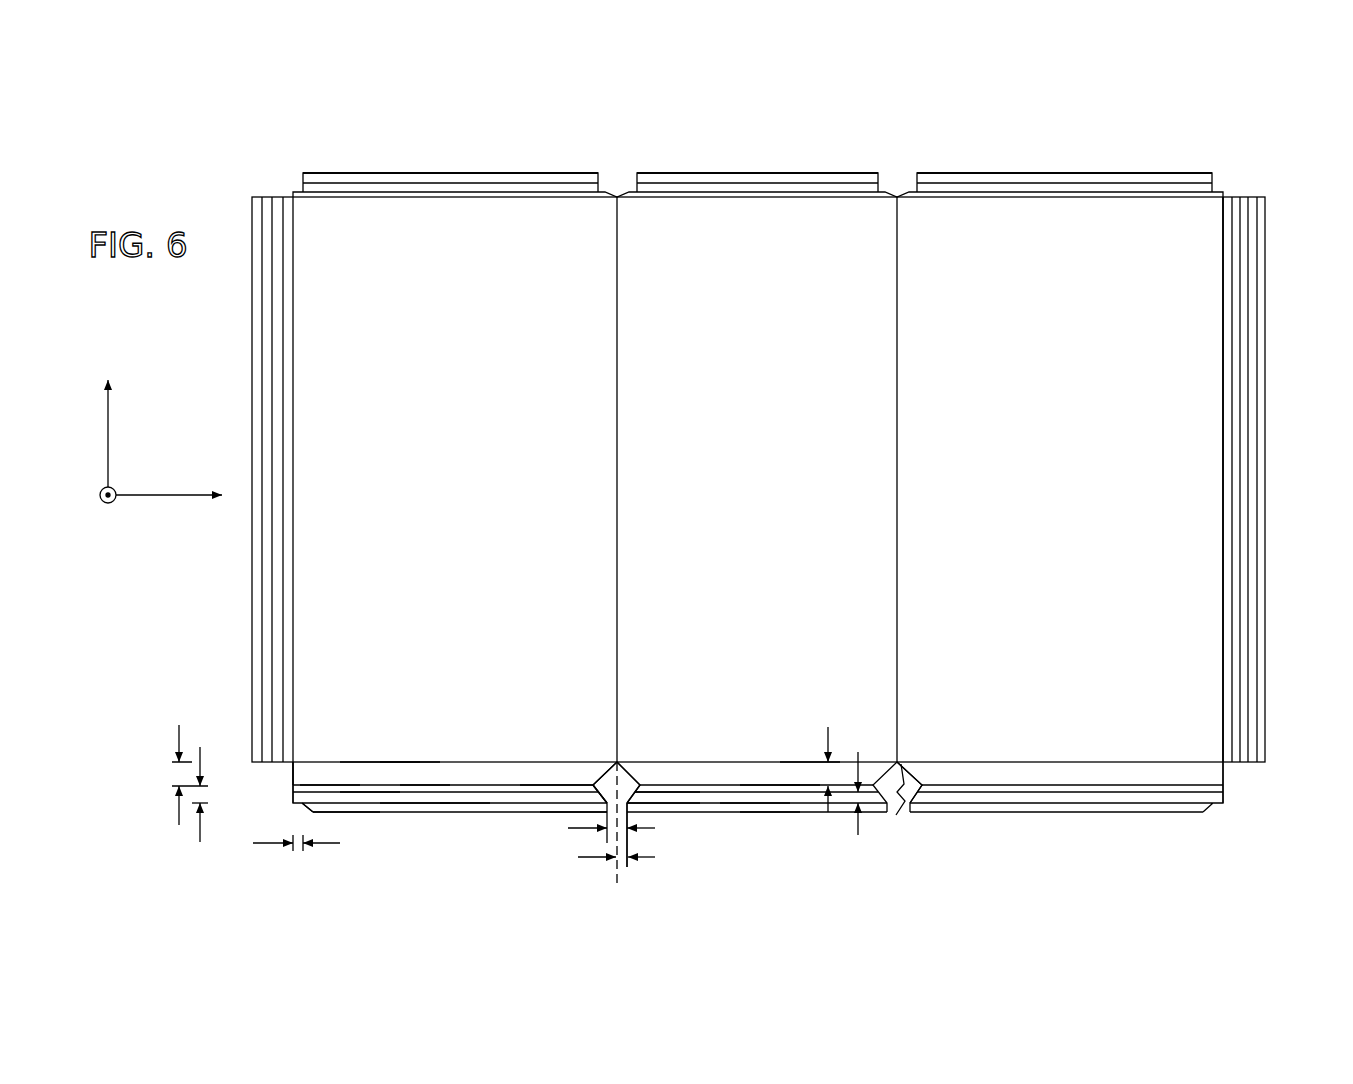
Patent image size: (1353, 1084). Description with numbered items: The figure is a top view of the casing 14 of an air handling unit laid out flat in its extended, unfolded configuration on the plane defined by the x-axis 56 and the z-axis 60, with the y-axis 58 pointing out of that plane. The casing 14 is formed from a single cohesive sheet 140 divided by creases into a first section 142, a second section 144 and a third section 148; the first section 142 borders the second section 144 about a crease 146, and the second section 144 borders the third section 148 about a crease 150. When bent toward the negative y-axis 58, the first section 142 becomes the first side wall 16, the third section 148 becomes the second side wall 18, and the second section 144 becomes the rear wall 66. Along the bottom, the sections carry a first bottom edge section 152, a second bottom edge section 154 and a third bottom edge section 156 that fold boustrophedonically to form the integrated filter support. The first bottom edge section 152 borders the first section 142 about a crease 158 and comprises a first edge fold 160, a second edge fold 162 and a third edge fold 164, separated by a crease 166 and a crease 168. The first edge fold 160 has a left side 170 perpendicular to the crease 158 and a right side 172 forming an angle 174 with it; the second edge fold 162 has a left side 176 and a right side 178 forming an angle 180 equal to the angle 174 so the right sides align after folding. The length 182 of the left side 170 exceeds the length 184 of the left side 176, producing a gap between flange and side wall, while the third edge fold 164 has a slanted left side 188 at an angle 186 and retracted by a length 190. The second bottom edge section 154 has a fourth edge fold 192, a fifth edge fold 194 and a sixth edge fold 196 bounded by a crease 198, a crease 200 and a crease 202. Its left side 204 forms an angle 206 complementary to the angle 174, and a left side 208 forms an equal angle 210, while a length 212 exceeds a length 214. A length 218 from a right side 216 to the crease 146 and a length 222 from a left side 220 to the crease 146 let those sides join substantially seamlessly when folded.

The casing 14 is at (1274, 126).
The first side wall 16 is at (485, 212).
The second side wall 18 is at (1107, 212).
The x-axis 56 is at (194, 498).
The y-axis 58 is at (103, 488).
The z-axis 60 is at (111, 442).
The rear wall 66 is at (778, 212).
The cohesive sheet 140 is at (1187, 345).
The first section 142 is at (613, 153).
The second section 144 is at (893, 153).
The crease 146 is at (619, 300).
The third section 148 is at (903, 153).
The crease 150 is at (899, 300).
The first bottom edge section 152 is at (285, 765).
The second bottom edge section 154 is at (913, 792).
The third bottom edge section 156 is at (1232, 765).
The crease 158 is at (410, 762).
The first edge fold 160 is at (378, 777).
The second edge fold 162 is at (362, 792).
The third edge fold 164 is at (412, 805).
The crease 166 is at (422, 785).
The crease 168 is at (465, 803).
The left side 170 is at (296, 772).
The right side 172 is at (590, 787).
The angle 174 is at (597, 765).
The left side 176 is at (335, 788).
The right side 178 is at (593, 795).
The angle 180 is at (547, 788).
The length 182 is at (178, 742).
The length 184 is at (201, 762).
The angle 186 is at (340, 810).
The slanted left side 188 is at (300, 808).
The length 190 is at (266, 850).
The fourth edge fold 192 is at (795, 778).
The fifth edge fold 194 is at (769, 812).
The sixth edge fold 196 is at (757, 797).
The crease 198 is at (828, 727).
The crease 200 is at (807, 762).
The crease 202 is at (770, 785).
The left side 204 is at (635, 778).
The angle 206 is at (630, 764).
The left side 208 is at (633, 793).
The angle 210 is at (637, 800).
The length 212 is at (831, 742).
The length 214 is at (860, 832).
The right side 216 is at (603, 812).
The length 218 is at (582, 829).
The left side 220 is at (650, 812).
The length 222 is at (592, 858).